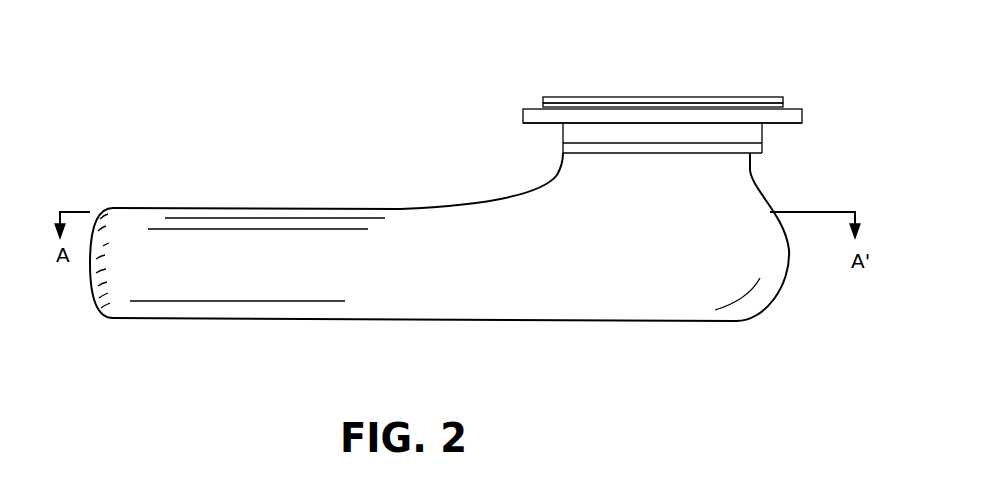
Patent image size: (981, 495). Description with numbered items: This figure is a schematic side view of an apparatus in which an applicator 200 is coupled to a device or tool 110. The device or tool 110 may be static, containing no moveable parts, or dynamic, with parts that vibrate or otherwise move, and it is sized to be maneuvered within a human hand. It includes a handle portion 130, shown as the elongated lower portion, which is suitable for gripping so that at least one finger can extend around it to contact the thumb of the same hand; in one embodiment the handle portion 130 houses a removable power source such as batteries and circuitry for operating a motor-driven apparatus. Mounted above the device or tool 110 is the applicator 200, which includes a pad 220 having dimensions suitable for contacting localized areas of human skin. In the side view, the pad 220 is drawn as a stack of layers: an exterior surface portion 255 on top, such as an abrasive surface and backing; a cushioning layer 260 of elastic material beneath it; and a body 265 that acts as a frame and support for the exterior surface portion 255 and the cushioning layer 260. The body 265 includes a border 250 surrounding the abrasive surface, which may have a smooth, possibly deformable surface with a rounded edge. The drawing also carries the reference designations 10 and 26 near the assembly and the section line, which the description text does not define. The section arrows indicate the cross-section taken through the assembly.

The pressure infusion device 10 is at (481, 214).
The attachment strip 26 is at (763, 145).
The device or tool 110 is at (163, 318).
The handle portion 130 is at (367, 266).
The applicator 200 is at (664, 103).
The pad 220 is at (627, 77).
The border 250 is at (803, 112).
The exterior surface portion 255 is at (578, 97).
The cushioning layer 260 is at (785, 103).
The body 265 is at (555, 118).